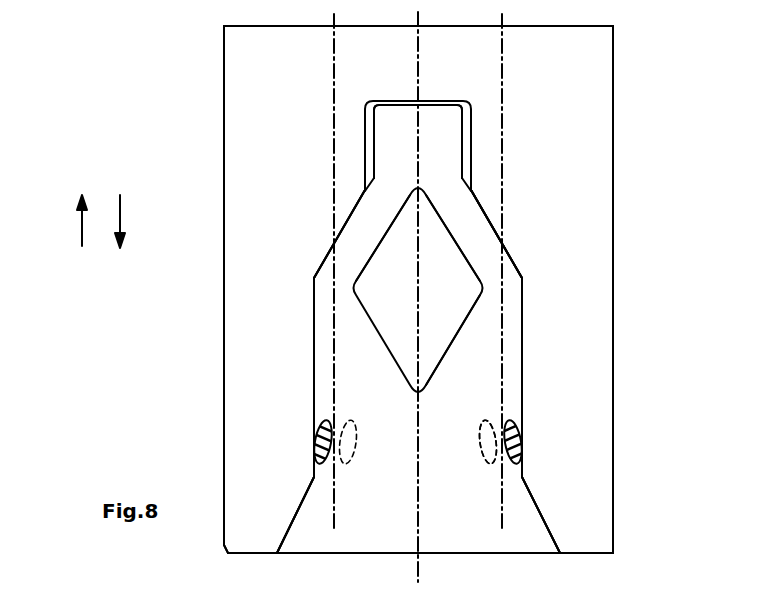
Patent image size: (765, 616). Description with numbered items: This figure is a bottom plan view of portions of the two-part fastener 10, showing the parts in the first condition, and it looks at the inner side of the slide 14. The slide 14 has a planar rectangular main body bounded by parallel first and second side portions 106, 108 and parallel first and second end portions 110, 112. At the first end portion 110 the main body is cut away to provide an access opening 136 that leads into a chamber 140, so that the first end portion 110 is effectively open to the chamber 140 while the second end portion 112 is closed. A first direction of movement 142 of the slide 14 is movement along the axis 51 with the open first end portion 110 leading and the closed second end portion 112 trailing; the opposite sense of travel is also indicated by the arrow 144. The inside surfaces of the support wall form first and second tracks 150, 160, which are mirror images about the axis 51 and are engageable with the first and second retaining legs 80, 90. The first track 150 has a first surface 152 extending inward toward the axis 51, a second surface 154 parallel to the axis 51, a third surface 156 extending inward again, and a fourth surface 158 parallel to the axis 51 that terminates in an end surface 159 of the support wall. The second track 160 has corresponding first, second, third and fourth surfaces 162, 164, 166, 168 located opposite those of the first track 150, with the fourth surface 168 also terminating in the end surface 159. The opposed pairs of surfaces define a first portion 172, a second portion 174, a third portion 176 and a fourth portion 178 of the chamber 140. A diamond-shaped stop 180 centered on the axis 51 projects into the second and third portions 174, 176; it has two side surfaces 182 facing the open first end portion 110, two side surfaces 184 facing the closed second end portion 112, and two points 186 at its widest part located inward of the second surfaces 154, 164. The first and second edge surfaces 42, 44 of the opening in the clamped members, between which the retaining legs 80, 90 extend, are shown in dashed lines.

The two-part fastener 10 is at (112, 388).
The slide 14 is at (185, 421).
The first edge surface 42 is at (335, 487).
The second edge surface 44 is at (505, 505).
The axis 51 is at (417, 481).
The first retaining leg 80 is at (313, 447).
The second retaining leg 90 is at (518, 442).
The first side portion 106 is at (224, 275).
The second side portion 108 is at (605, 258).
The first end portion 110 is at (598, 530).
The second end portion 112 is at (268, 73).
The access opening 136 is at (492, 553).
The chamber 140 is at (482, 496).
The first direction of movement 142 is at (125, 212).
The upward direction 144 is at (80, 238).
The first track 150 is at (304, 366).
The first surface 152 is at (295, 522).
The second surface 154 is at (318, 383).
The third surface 156 is at (348, 222).
The fourth surface 158 is at (376, 148).
The end surface 159 is at (392, 103).
The second track 160 is at (534, 365).
The first surface 162 is at (531, 505).
The second surface 164 is at (519, 297).
The third surface 166 is at (485, 232).
The fourth surface 168 is at (470, 125).
The first portion of chamber 172 is at (484, 549).
The second portion of chamber 174 is at (490, 400).
The third portion of chamber 176 is at (480, 247).
The fourth portion of chamber 178 is at (440, 150).
The stop 180 is at (356, 316).
The side surfaces 182 is at (458, 340).
The side surfaces 184 is at (365, 266).
The points 186 is at (483, 288).